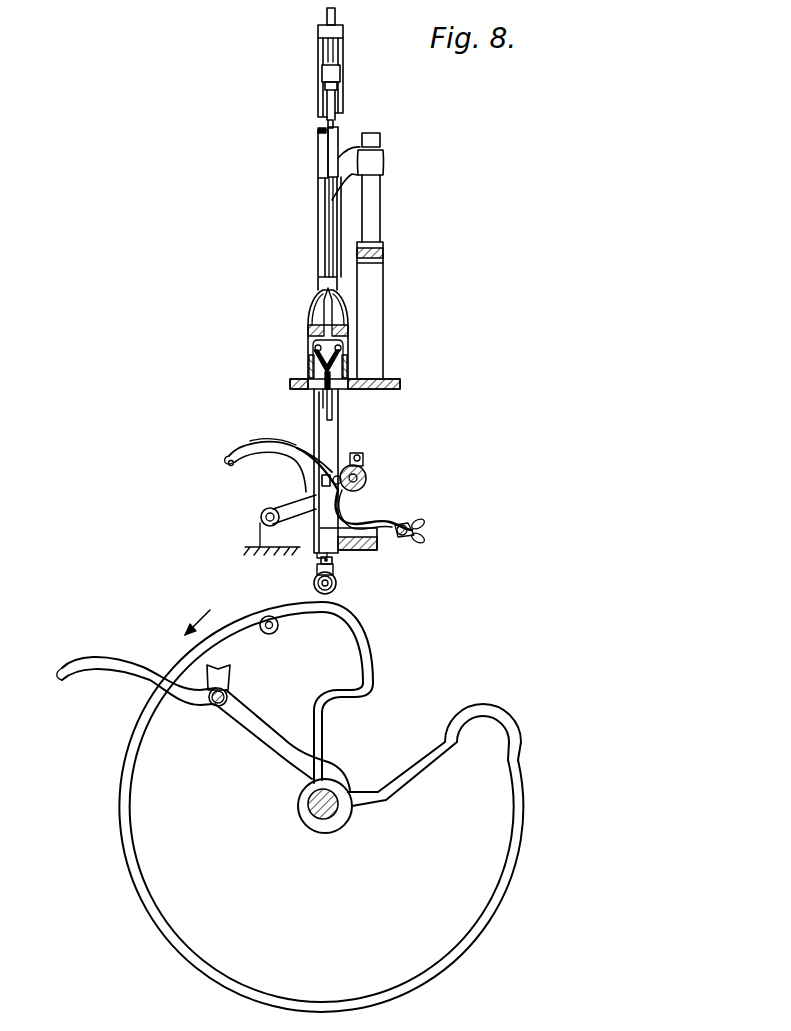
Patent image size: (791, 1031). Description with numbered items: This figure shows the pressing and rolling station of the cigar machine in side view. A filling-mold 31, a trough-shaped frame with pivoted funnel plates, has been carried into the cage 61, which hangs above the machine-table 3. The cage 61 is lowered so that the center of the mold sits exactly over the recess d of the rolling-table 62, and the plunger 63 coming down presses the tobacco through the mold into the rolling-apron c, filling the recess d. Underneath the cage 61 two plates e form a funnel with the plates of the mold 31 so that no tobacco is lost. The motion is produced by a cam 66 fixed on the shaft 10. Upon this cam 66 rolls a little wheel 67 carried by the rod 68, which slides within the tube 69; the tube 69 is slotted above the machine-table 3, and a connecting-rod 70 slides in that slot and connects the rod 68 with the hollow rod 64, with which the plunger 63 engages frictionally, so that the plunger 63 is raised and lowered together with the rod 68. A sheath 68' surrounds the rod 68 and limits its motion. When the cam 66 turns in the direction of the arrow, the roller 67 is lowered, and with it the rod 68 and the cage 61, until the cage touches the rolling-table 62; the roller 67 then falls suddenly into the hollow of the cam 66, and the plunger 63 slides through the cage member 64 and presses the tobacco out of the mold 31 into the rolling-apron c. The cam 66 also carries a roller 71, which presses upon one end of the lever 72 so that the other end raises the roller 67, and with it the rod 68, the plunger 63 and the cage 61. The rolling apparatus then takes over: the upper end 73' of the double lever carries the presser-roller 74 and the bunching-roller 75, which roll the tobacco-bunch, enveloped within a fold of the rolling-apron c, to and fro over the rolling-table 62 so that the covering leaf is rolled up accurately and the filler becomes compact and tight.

The sheath 68' is at (354, 19).
The tube 69 is at (338, 57).
The connecting-rod 70 is at (322, 77).
The plunger 63 is at (328, 155).
The hollow rod 64 is at (330, 238).
The cage 61 is at (308, 331).
The filling-mold 31 is at (310, 356).
The machine-table 3 is at (380, 389).
The plates e is at (334, 412).
The rolling-apron c is at (263, 442).
The rolling-table 62 is at (262, 453).
The recess d is at (322, 480).
The upper end of the double lever 73' is at (280, 525).
The presser-roller 74 is at (367, 480).
The bunching-roller 75 is at (356, 497).
The rod 68 is at (342, 567).
The little wheel 67 is at (335, 590).
The cam 66 is at (134, 748).
The roller 71 is at (278, 630).
The lever 72 is at (100, 666).
The shaft 10 is at (336, 819).